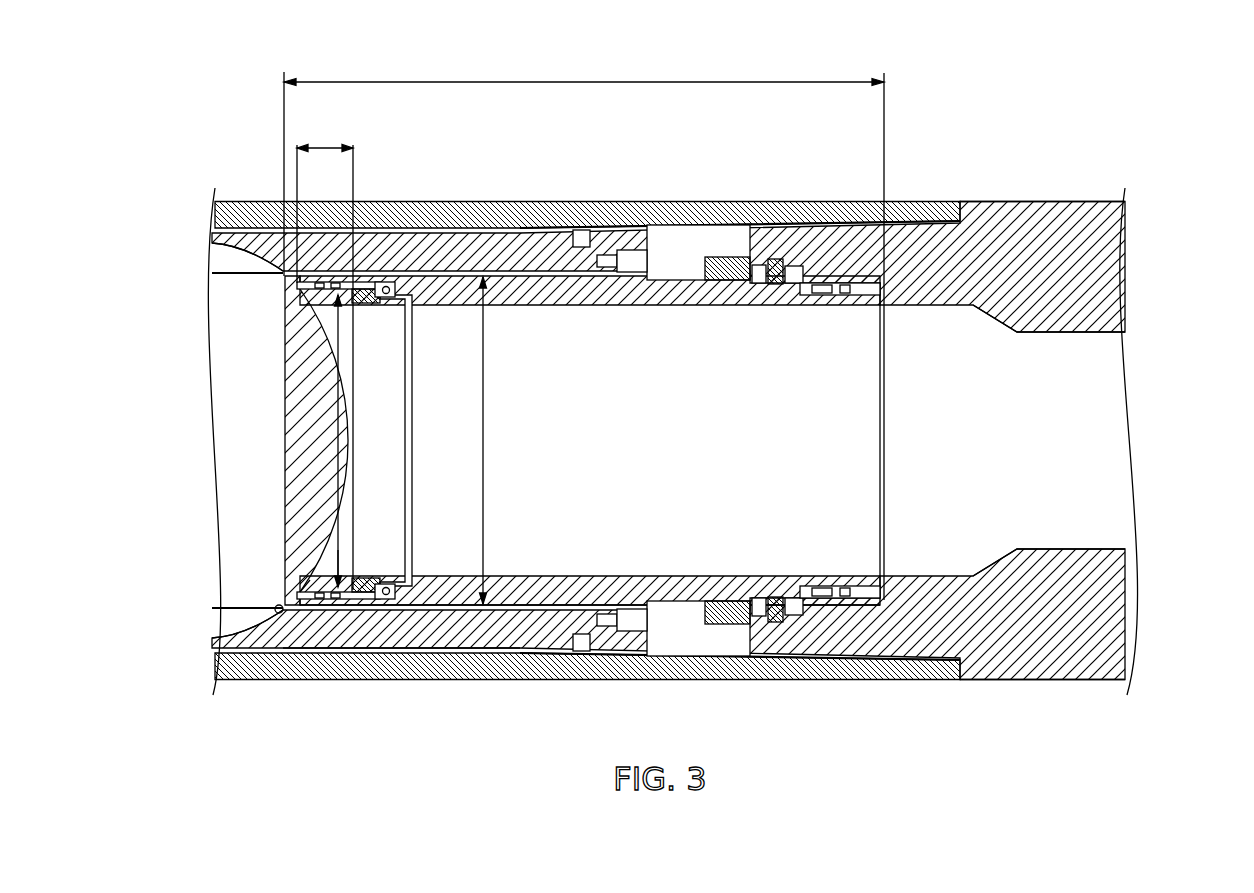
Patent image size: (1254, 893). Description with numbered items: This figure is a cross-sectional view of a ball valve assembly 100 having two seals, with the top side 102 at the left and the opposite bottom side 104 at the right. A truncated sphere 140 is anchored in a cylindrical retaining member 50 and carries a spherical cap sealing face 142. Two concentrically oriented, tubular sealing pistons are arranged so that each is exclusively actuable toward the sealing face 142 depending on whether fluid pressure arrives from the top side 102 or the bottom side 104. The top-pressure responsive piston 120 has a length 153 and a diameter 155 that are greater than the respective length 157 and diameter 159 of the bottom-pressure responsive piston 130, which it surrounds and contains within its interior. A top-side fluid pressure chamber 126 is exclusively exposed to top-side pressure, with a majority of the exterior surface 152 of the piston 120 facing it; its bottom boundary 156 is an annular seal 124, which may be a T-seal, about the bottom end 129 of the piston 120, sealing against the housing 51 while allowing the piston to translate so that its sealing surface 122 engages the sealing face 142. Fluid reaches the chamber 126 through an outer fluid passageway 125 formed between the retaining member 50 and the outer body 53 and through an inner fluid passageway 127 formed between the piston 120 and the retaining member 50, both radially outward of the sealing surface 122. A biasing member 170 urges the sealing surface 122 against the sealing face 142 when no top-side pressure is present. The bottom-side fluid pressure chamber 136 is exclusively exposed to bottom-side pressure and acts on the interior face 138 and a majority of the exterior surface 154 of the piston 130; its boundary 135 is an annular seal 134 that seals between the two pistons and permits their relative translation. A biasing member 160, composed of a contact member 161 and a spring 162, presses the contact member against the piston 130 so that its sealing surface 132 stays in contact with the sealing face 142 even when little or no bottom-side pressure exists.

The ball valve assembly 100 is at (983, 95).
The top side 102 is at (147, 451).
The bottom side 104 is at (1244, 451).
The top-pressure responsive piston 120 is at (553, 590).
The sealing surface 122 is at (279, 604).
The annular seal 124 is at (826, 600).
The outer fluid passageway 125 is at (470, 640).
The top-side fluid pressure chamber 126 is at (697, 640).
The inner fluid passageway 127 is at (528, 605).
The bottom end 129 is at (823, 592).
The bottom-pressure responsive piston 130 is at (310, 595).
The sealing surface 132 is at (310, 582).
The annular seal 134 is at (322, 597).
The boundary 135 is at (333, 597).
The bottom-side fluid pressure chamber 136 is at (652, 454).
The interior face 138 is at (338, 550).
The truncated sphere 140 is at (228, 262).
The spherical cap sealing face 142 is at (297, 280).
The exterior surface 152 is at (578, 620).
The length 153 is at (585, 80).
The exterior surface 154 is at (338, 597).
The diameter 155 is at (488, 398).
The bottom boundary 156 is at (805, 612).
The length 157 is at (327, 146).
The diameter 159 is at (338, 328).
The biasing member 160 is at (410, 492).
The contact member 161 is at (347, 597).
The spring 162 is at (386, 286).
The biasing member 170 is at (763, 625).
The cylindrical retaining member 50 is at (548, 240).
The housing 51 is at (1045, 213).
The outer body 53 is at (723, 213).